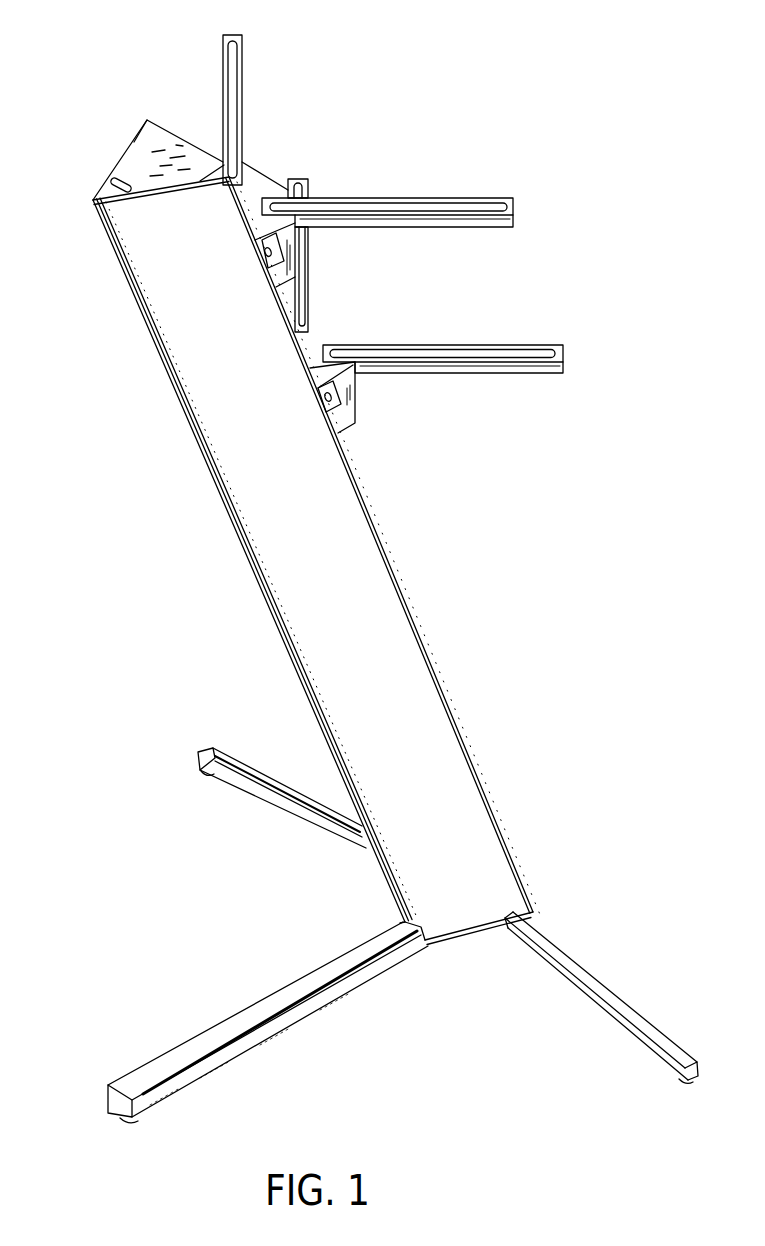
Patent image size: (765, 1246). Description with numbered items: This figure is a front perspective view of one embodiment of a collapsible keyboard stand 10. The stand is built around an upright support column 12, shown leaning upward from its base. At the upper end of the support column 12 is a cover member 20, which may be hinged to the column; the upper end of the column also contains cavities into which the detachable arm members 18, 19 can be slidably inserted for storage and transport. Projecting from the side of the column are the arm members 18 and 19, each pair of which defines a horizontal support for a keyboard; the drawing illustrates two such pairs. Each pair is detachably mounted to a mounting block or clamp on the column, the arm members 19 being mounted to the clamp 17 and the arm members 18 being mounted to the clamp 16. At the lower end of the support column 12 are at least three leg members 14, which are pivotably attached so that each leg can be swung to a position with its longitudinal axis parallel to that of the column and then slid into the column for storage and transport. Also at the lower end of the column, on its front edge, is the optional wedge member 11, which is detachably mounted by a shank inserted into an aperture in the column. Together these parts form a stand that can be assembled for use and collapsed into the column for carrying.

The collapsible keyboard stand 10 is at (414, 67).
The wedge member 11 is at (400, 922).
The upright support column 12 is at (208, 447).
The leg members 14 is at (253, 795).
The clamp 16 is at (348, 410).
The clamp 17 is at (288, 265).
The arm member 18 is at (310, 186).
The arm member 19 is at (243, 100).
The cover member 20 is at (130, 148).